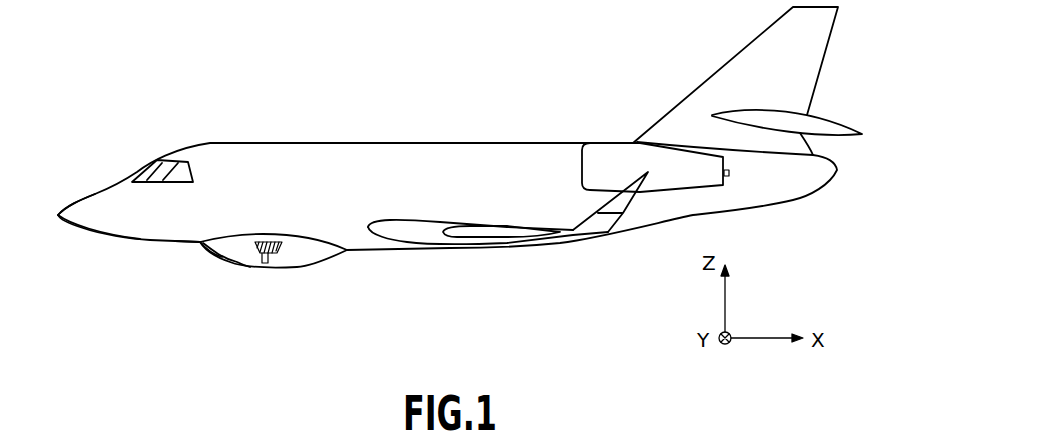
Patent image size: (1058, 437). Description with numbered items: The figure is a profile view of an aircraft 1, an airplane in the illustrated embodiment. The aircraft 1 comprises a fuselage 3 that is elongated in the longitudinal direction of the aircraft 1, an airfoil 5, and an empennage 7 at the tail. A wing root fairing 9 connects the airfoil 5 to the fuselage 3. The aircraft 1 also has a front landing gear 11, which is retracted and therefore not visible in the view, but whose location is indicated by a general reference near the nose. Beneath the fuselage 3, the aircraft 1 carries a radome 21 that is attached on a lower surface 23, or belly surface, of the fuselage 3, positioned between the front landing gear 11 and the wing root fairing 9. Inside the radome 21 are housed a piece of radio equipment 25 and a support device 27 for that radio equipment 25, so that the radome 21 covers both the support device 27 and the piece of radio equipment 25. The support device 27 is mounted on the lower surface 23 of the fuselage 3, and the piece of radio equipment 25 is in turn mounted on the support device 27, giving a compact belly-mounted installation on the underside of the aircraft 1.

The aircraft 1 is at (412, 111).
The fuselage 3 is at (343, 217).
The airfoil 5 is at (457, 240).
The empennage 7 is at (803, 72).
The wing root fairing 9 is at (395, 245).
The front landing gear 11 is at (147, 253).
The radome 21 is at (295, 267).
The lower surface 23 is at (200, 241).
The piece of radio equipment 25 is at (262, 266).
The support device 27 is at (249, 248).